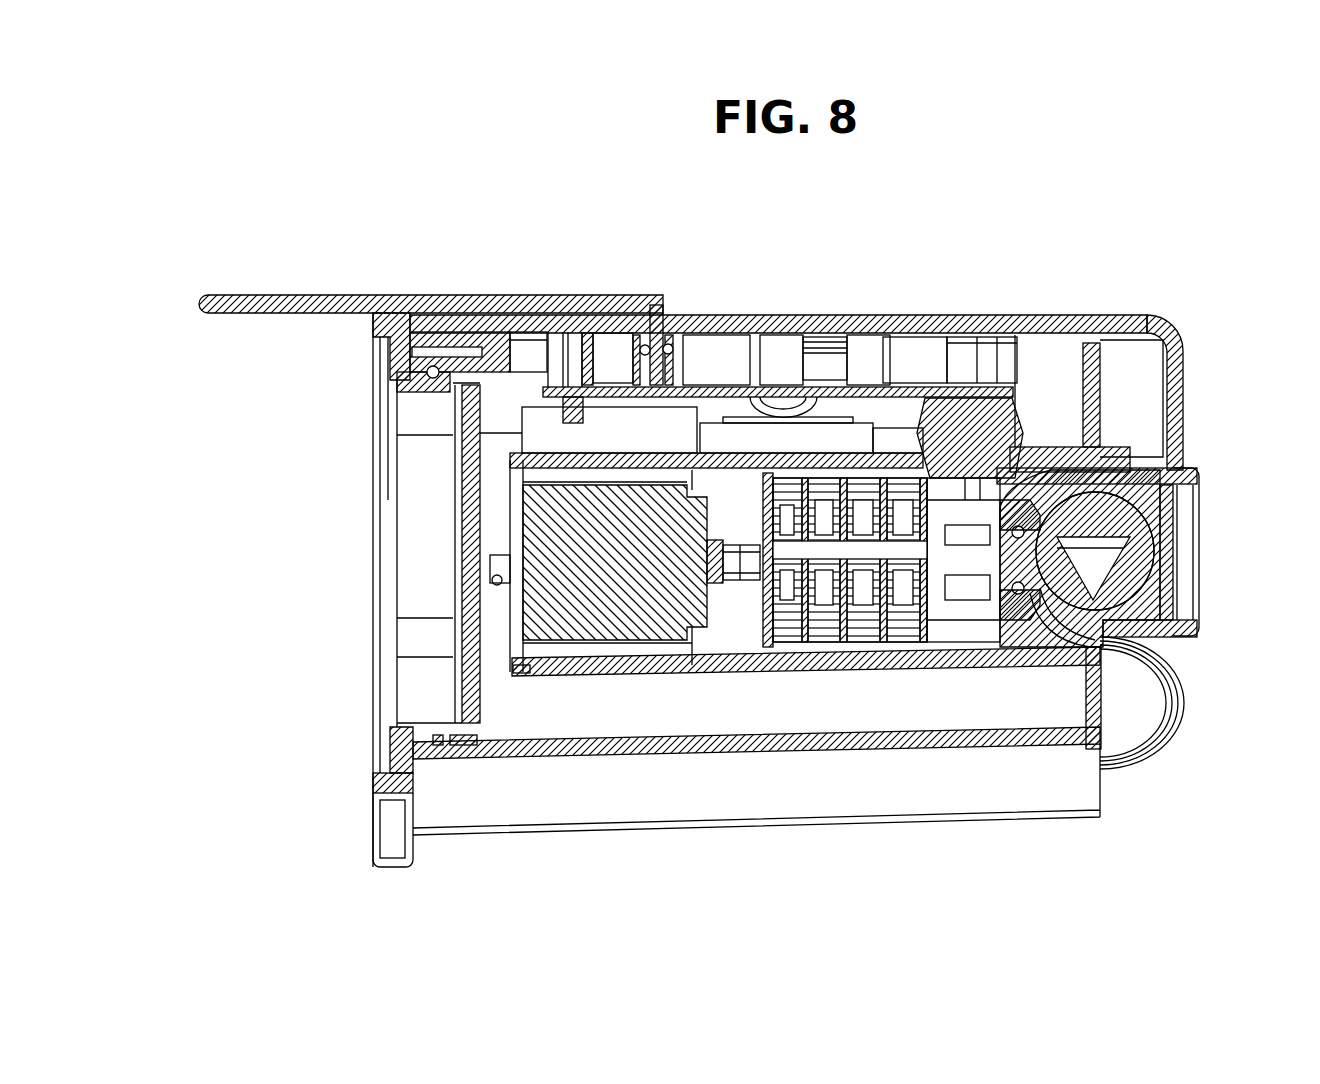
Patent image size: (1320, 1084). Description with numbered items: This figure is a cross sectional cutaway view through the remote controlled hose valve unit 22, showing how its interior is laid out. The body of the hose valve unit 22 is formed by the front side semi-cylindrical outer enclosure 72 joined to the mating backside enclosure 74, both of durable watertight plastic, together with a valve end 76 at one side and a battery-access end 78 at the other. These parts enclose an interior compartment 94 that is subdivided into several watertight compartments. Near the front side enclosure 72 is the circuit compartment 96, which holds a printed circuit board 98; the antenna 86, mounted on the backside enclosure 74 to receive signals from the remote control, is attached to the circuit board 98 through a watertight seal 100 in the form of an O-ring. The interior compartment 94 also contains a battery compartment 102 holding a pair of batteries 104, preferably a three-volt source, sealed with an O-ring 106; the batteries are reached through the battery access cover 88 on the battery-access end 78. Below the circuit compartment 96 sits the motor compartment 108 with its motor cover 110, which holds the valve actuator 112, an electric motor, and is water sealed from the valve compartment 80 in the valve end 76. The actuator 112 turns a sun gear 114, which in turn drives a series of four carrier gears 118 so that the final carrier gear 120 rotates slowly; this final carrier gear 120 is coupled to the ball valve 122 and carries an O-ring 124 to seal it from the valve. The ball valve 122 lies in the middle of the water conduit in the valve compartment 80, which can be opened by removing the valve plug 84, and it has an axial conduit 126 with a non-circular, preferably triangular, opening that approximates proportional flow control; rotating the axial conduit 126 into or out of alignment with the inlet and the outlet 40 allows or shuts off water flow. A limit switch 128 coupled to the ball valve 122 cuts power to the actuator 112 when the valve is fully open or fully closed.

The hose valve unit 22 is at (878, 246).
The outlet 40 is at (1186, 677).
The front side semi-cylindrical outer enclosure 72 is at (843, 313).
The outer backside enclosure 74 is at (898, 782).
The valve end 76 is at (1184, 406).
The battery-access end 78 is at (372, 752).
The valve compartment 80 is at (1150, 503).
The valve plug 84 is at (1202, 584).
The antenna 86 is at (333, 293).
The battery access cover 88 is at (372, 645).
The interior compartment 94 is at (1062, 433).
The circuit compartment 96 is at (963, 347).
The printed circuit board 98 is at (948, 357).
The watertight seal 100 is at (645, 345).
The battery compartment 102 is at (410, 414).
The batteries 104 is at (418, 527).
The O-ring 106 is at (437, 770).
The motor compartment 108 is at (650, 650).
The motor cover 110 is at (510, 680).
The valve actuator 112 is at (572, 645).
The sun gear 114 is at (740, 583).
The carrier gears 118 is at (787, 650).
The final carrier gear 120 is at (930, 655).
The ball valve 122 is at (1112, 640).
The O-ring 124 is at (1020, 560).
The axial conduit 126 is at (1105, 565).
The limit switch 128 is at (1015, 420).